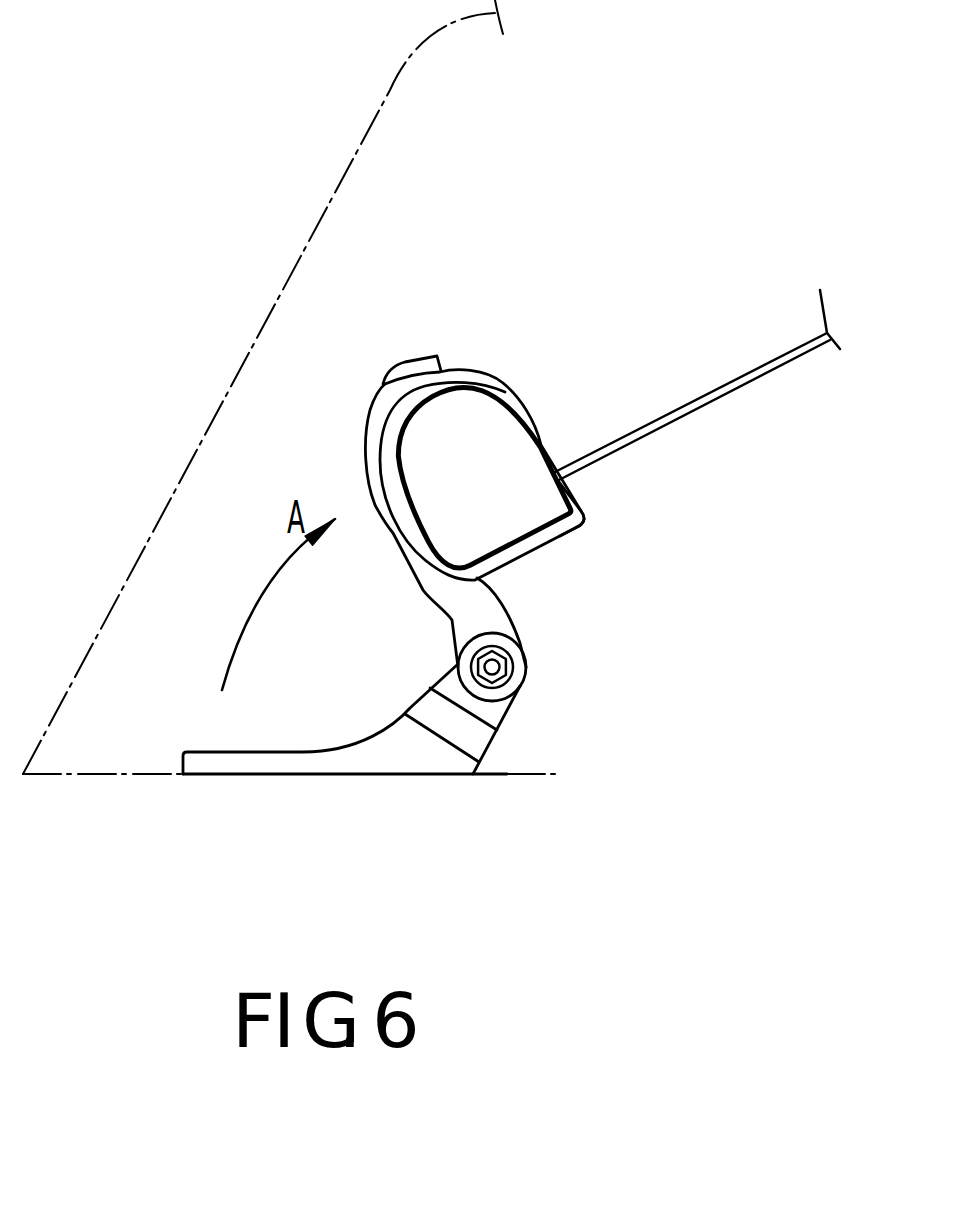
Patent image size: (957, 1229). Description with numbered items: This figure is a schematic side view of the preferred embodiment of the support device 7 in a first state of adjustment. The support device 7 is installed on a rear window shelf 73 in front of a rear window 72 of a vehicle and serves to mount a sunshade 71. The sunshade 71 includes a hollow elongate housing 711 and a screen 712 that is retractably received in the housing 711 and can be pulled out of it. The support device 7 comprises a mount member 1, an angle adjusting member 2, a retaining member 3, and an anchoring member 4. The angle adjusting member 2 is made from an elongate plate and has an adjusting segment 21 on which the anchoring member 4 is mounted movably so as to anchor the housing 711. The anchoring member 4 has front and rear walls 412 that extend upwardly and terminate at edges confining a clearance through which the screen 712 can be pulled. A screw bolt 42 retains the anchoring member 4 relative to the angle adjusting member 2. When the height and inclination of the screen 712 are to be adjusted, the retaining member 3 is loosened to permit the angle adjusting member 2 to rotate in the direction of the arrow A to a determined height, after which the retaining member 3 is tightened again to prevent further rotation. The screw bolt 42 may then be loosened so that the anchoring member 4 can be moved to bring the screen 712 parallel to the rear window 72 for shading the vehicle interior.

The mount member 1 is at (392, 763).
The angle adjusting member 2 is at (492, 612).
The retaining member 3 is at (500, 666).
The anchoring member 4 is at (534, 375).
The support device 7 is at (537, 688).
The adjusting segment 21 is at (365, 455).
The screw bolt 42 is at (392, 370).
The sunshade 71 is at (585, 414).
The rear window 72 is at (390, 92).
The rear window shelf 73 is at (507, 774).
The housing 711 is at (537, 503).
The screen 712 is at (725, 394).
The front and rear walls 412 is at (547, 532).